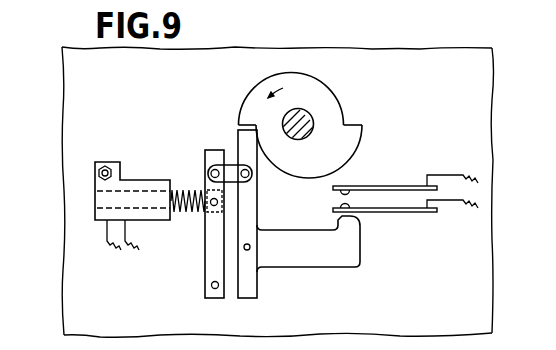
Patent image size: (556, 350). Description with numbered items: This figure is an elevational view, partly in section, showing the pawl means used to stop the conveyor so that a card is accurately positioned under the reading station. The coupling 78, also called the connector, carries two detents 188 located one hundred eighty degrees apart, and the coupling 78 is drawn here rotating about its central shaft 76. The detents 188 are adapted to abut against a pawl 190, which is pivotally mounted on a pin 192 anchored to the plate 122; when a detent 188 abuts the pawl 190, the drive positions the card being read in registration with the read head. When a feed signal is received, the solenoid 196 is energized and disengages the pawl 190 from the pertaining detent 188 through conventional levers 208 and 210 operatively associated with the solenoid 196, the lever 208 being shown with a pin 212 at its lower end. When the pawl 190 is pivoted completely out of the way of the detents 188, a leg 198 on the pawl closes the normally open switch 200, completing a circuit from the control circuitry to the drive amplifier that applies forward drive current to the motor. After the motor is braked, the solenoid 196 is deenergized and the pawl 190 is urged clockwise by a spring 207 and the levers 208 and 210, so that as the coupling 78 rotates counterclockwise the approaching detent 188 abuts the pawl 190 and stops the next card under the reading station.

The shaft 76 is at (307, 113).
The coupling 78 is at (308, 78).
The plate 122 is at (64, 305).
The detent 188 is at (238, 125).
The pawl 190 is at (252, 160).
The pin 192 is at (250, 248).
The solenoid 196 is at (143, 186).
The leg 198 is at (355, 240).
The normally open switch 200 is at (370, 187).
The spring 207 is at (197, 216).
The lever 208 is at (213, 245).
The lever 210 is at (230, 173).
The pin 212 is at (211, 285).